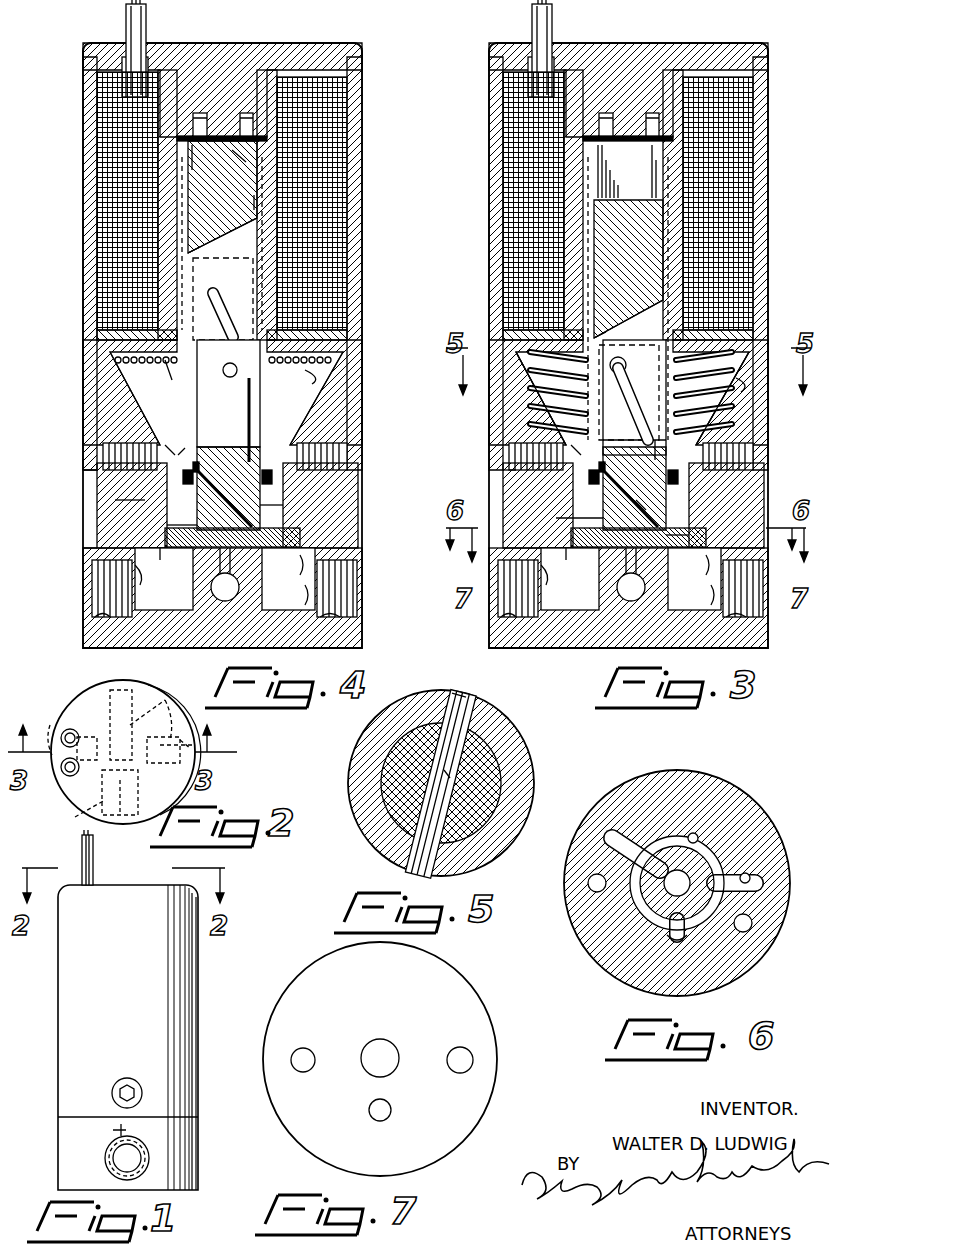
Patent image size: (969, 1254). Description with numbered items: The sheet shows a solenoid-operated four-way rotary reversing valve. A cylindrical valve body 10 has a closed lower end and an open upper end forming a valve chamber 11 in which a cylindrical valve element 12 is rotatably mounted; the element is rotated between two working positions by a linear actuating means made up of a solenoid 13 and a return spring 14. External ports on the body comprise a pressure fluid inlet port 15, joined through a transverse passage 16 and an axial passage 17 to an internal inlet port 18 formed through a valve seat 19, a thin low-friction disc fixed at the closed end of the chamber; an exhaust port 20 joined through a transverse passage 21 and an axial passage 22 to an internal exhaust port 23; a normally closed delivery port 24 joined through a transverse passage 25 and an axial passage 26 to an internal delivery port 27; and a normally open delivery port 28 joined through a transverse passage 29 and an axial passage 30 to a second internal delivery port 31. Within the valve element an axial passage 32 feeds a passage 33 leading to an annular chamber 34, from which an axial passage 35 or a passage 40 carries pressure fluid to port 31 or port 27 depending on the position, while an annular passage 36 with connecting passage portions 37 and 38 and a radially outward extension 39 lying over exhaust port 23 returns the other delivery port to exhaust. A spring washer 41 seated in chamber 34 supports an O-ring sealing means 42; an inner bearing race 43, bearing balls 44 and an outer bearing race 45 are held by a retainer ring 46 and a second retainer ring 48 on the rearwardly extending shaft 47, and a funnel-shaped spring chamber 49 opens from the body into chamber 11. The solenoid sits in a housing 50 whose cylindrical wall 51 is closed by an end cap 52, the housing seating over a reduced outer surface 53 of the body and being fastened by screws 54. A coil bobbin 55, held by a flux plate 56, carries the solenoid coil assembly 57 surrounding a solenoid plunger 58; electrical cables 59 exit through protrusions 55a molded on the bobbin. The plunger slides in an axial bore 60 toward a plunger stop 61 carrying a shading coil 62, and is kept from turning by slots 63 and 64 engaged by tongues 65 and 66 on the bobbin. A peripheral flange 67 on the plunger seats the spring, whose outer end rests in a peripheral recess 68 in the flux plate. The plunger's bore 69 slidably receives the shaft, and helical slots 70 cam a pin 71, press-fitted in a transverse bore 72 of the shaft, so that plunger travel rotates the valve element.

In FIG. 4, the valve body 10 is at (83, 637).
In FIG. 3, the valve body 10 is at (609, 598).
In FIG. 1, the valve body 10 is at (200, 1151).
In FIG. 4, the valve chamber 11 is at (97, 520).
In FIG. 4, the valve element 12 is at (97, 495).
In FIG. 3, the valve element 12 is at (653, 505).
In FIG. 6, the valve element 12 is at (755, 800).
In FIG. 4, the solenoid 13 is at (125, 268).
In FIG. 3, the solenoid 13 is at (507, 201).
In FIG. 4, the return spring 14 is at (95, 393).
In FIG. 3, the return spring 14 is at (602, 398).
In FIG. 4, the pressure fluid inlet port 15 is at (225, 641).
In FIG. 3, the pressure fluid inlet port 15 is at (628, 652).
In FIG. 2, the pressure fluid inlet port 15 is at (155, 690).
In FIG. 4, the transverse passage 16 is at (240, 592).
In FIG. 3, the transverse passage 16 is at (686, 580).
In FIG. 2, the transverse passage 16 is at (165, 704).
In FIG. 4, the axial passage 17 is at (226, 577).
In FIG. 3, the axial passage 17 is at (617, 593).
In FIG. 4, the inlet port 18 is at (195, 575).
In FIG. 3, the inlet port 18 is at (581, 575).
In FIG. 2, the inlet port 18 is at (132, 745).
In FIG. 7, the inlet port 18 is at (390, 1050).
In FIG. 4, the valve seat 19 is at (300, 538).
In FIG. 3, the valve seat 19 is at (625, 557).
In FIG. 7, the valve seat 19 is at (462, 976).
In FIG. 2, the exhaust port 20 is at (125, 815).
In FIG. 1, the exhaust port 20 is at (113, 1159).
In FIG. 2, the transverse passage 21 is at (84, 816).
In FIG. 1, the axial passage 22 is at (112, 1128).
In FIG. 2, the exhaust port 23 is at (110, 785).
In FIG. 7, the exhaust port 23 is at (392, 1112).
In FIG. 4, the first delivery port 24 is at (355, 573).
In FIG. 3, the first delivery port 24 is at (768, 603).
In FIG. 2, the first delivery port 24 is at (178, 742).
In FIG. 4, the transverse passage 25 is at (340, 613).
In FIG. 3, the transverse passage 25 is at (728, 642).
In FIG. 2, the transverse passage 25 is at (160, 765).
In FIG. 4, the axial passage 26 is at (294, 569).
In FIG. 3, the axial passage 26 is at (709, 573).
In FIG. 4, the delivery port 27 is at (297, 595).
In FIG. 3, the delivery port 27 is at (692, 594).
In FIG. 2, the delivery port 27 is at (186, 716).
In FIG. 7, the delivery port 27 is at (470, 1056).
In FIG. 4, the second delivery port 28 is at (95, 578).
In FIG. 3, the second delivery port 28 is at (496, 591).
In FIG. 2, the second delivery port 28 is at (52, 738).
In FIG. 4, the transverse passage 29 is at (150, 608).
In FIG. 3, the transverse passage 29 is at (541, 651).
In FIG. 2, the transverse passage 29 is at (72, 732).
In FIG. 4, the axial passage 30 is at (149, 575).
In FIG. 3, the axial passage 30 is at (569, 581).
In FIG. 4, the second delivery port 31 is at (170, 548).
In FIG. 3, the second delivery port 31 is at (572, 569).
In FIG. 2, the second delivery port 31 is at (86, 737).
In FIG. 7, the second delivery port 31 is at (308, 1050).
In FIG. 4, the axial passage 32 is at (225, 587).
In FIG. 3, the axial passage 32 is at (631, 586).
In FIG. 6, the axial passage 32 is at (672, 870).
In FIG. 4, the passage 33 is at (228, 488).
In FIG. 3, the passage 33 is at (634, 488).
In FIG. 4, the annular chamber 34 is at (224, 498).
In FIG. 3, the annular chamber 34 is at (634, 496).
In FIG. 3, the axial passage 35 is at (574, 510).
In FIG. 6, the axial passage 35 is at (582, 920).
In FIG. 3, the annular passage 36 is at (637, 503).
In FIG. 6, the annular passage 36 is at (696, 833).
In FIG. 3, the connecting passage portion 37 is at (697, 543).
In FIG. 6, the connecting passage portion 37 is at (758, 878).
In FIG. 4, the connecting passage portion 38 is at (197, 530).
In FIG. 6, the connecting passage portion 38 is at (612, 846).
In FIG. 6, the extension 39 is at (680, 946).
In FIG. 4, the passage 40 is at (262, 517).
In FIG. 6, the passage 40 is at (752, 923).
In FIG. 4, the spring washer 41 is at (130, 506).
In FIG. 3, the spring washer 41 is at (491, 478).
In FIG. 4, the O-ring sealing means 42 is at (200, 462).
In FIG. 3, the O-ring sealing means 42 is at (567, 485).
In FIG. 4, the inner bearing race 43 is at (190, 470).
In FIG. 3, the inner bearing race 43 is at (660, 491).
In FIG. 4, the bearing balls 44 is at (267, 470).
In FIG. 3, the bearing balls 44 is at (698, 483).
In FIG. 4, the outer bearing race 45 is at (180, 445).
In FIG. 3, the outer bearing race 45 is at (722, 398).
In FIG. 4, the retainer ring 46 is at (168, 441).
In FIG. 3, the retainer ring 46 is at (560, 467).
In FIG. 4, the shaft 47 is at (252, 396).
In FIG. 3, the shaft 47 is at (634, 397).
In FIG. 5, the shaft 47 is at (483, 803).
In FIG. 4, the second retainer ring 48 is at (267, 427).
In FIG. 3, the second retainer ring 48 is at (642, 431).
In FIG. 4, the spring chamber 49 is at (315, 378).
In FIG. 3, the spring chamber 49 is at (770, 383).
In FIG. 4, the housing 50 is at (363, 244).
In FIG. 3, the housing 50 is at (658, 263).
In FIG. 1, the housing 50 is at (200, 983).
In FIG. 4, the cylindrical wall 51 is at (360, 197).
In FIG. 3, the cylindrical wall 51 is at (691, 205).
In FIG. 1, the cylindrical wall 51 is at (178, 1025).
In FIG. 4, the end cap 52 is at (300, 44).
In FIG. 3, the end cap 52 is at (628, 70).
In FIG. 4, the reduced outer surface 53 is at (362, 402).
In FIG. 3, the reduced outer surface 53 is at (658, 392).
In FIG. 4, the screws 54 is at (100, 453).
In FIG. 3, the screws 54 is at (630, 451).
In FIG. 1, the screws 54 is at (131, 1085).
In FIG. 4, the coil bobbin 55 is at (327, 45).
In FIG. 3, the coil bobbin 55 is at (752, 32).
In FIG. 4, the protrusions 55a is at (114, 44).
In FIG. 3, the protrusions 55a is at (492, 35).
In FIG. 4, the flux plate 56 is at (348, 337).
In FIG. 3, the flux plate 56 is at (672, 325).
In FIG. 4, the solenoid coil assembly 57 is at (330, 286).
In FIG. 3, the solenoid coil assembly 57 is at (754, 203).
In FIG. 4, the solenoid plunger 58 is at (205, 199).
In FIG. 3, the solenoid plunger 58 is at (628, 254).
In FIG. 5, the solenoid plunger 58 is at (348, 749).
In FIG. 4, the electrical cables 59 is at (147, 27).
In FIG. 3, the electrical cables 59 is at (566, 48).
In FIG. 2, the electrical cables 59 is at (65, 728).
In FIG. 1, the electrical cables 59 is at (93, 870).
In FIG. 4, the axial bore 60 is at (268, 144).
In FIG. 3, the axial bore 60 is at (698, 146).
In FIG. 4, the plunger stop 61 is at (234, 169).
In FIG. 3, the plunger stop 61 is at (631, 178).
In FIG. 4, the shading coil 62 is at (248, 113).
In FIG. 3, the shading coil 62 is at (630, 73).
In FIG. 4, the slot 63 is at (266, 231).
In FIG. 3, the slot 63 is at (630, 319).
In FIG. 4, the slot 64 is at (190, 254).
In FIG. 3, the slot 64 is at (615, 336).
In FIG. 4, the tongue 65 is at (253, 196).
In FIG. 3, the tongue 65 is at (653, 169).
In FIG. 4, the tongue 66 is at (206, 159).
In FIG. 3, the tongue 66 is at (616, 171).
In FIG. 4, the peripheral flange 67 is at (155, 376).
In FIG. 3, the peripheral flange 67 is at (541, 398).
In FIG. 4, the peripheral recess 68 is at (115, 361).
In FIG. 3, the peripheral recess 68 is at (674, 366).
In FIG. 4, the bore 69 is at (230, 290).
In FIG. 3, the bore 69 is at (628, 298).
In FIG. 4, the helical slot 70 is at (221, 311).
In FIG. 3, the helical slot 70 is at (641, 404).
In FIG. 5, the helical slot 70 is at (400, 853).
In FIG. 4, the pin 71 is at (228, 379).
In FIG. 3, the pin 71 is at (637, 368).
In FIG. 5, the pin 71 is at (465, 700).
In FIG. 5, the transverse bore 72 is at (447, 775).